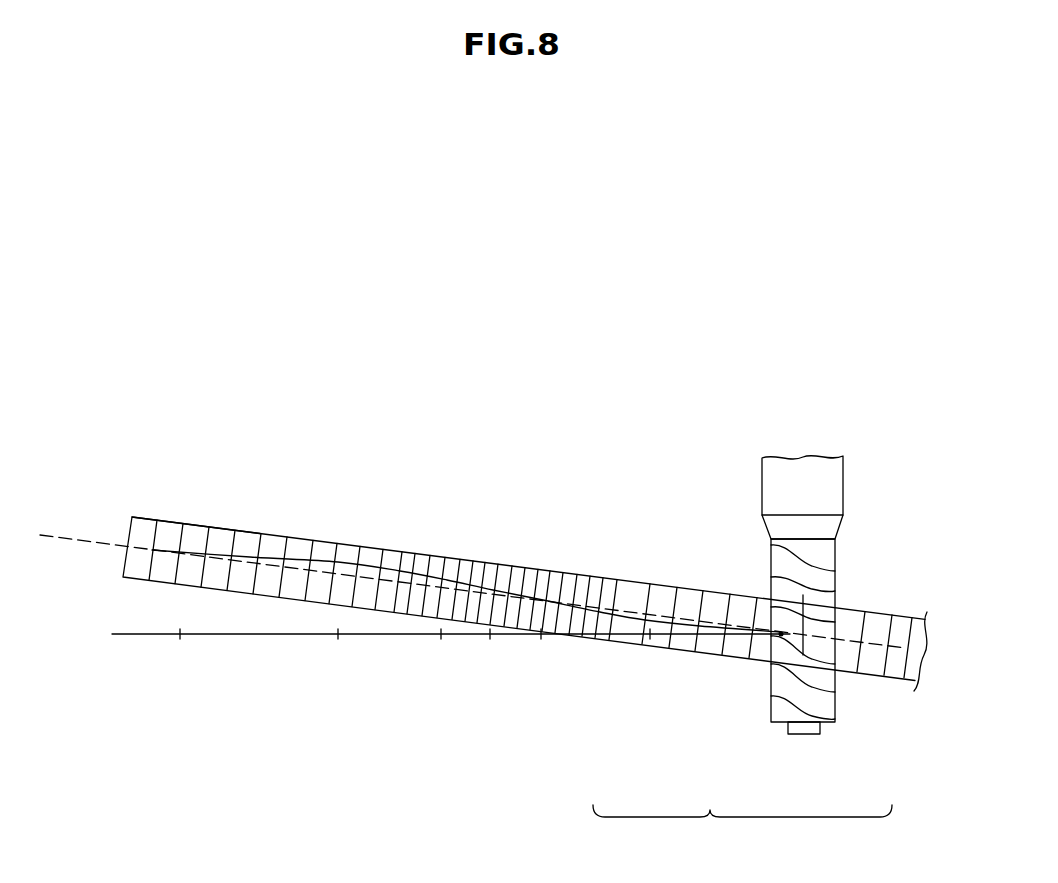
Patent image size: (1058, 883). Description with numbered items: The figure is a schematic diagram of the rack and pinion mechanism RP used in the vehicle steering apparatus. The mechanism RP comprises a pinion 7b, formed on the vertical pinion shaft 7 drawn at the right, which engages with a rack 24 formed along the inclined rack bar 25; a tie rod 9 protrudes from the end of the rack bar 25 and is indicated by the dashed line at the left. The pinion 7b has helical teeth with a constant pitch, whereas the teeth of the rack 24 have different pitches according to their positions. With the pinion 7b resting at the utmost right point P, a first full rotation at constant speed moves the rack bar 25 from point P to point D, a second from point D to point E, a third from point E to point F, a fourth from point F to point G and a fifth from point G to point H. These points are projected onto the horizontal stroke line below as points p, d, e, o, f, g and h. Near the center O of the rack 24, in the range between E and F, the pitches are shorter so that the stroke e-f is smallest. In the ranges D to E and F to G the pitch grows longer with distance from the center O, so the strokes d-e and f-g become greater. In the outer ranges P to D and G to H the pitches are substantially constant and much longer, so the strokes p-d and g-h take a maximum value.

The rack 24 is at (188, 522).
The rack bar 25 is at (143, 517).
The connecting pin 7 is at (762, 488).
The pinion 7b is at (832, 707).
The tie rod 9 is at (73, 540).
The point p is at (803, 635).
The utmost right point P is at (803, 635).
The point H is at (180, 552).
The point G is at (338, 562).
The point F is at (447, 580).
The center O is at (492, 588).
The point E is at (543, 598).
The point D is at (645, 620).
The point h is at (180, 658).
The point g is at (338, 656).
The point f is at (441, 658).
The point o is at (489, 658).
The point e is at (541, 658).
The point d is at (650, 660).
The rack and pinion mechanism RP is at (742, 828).